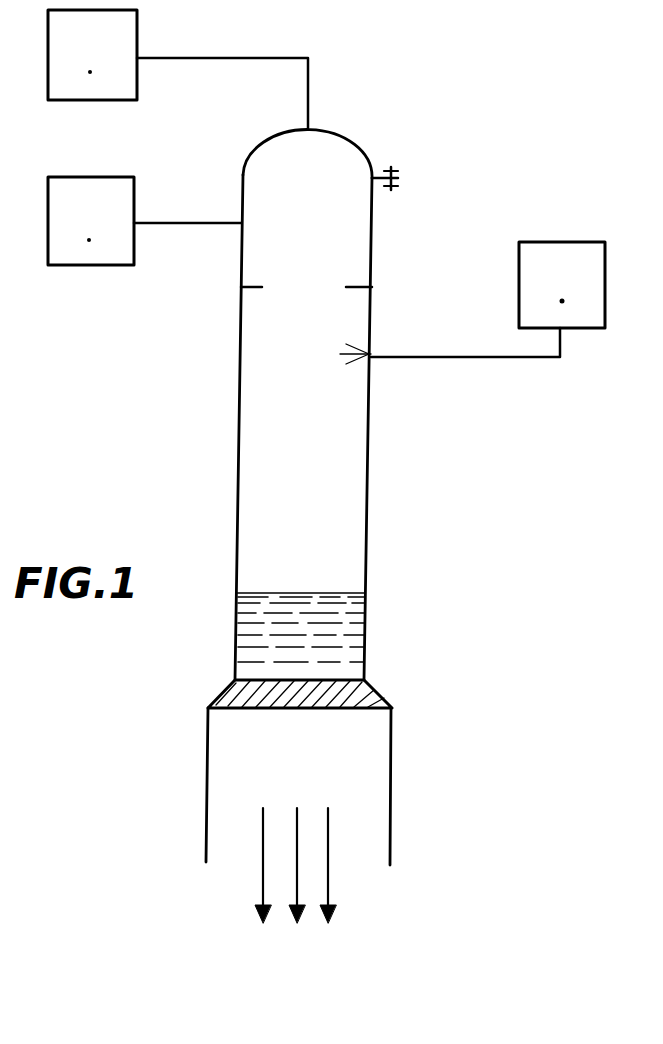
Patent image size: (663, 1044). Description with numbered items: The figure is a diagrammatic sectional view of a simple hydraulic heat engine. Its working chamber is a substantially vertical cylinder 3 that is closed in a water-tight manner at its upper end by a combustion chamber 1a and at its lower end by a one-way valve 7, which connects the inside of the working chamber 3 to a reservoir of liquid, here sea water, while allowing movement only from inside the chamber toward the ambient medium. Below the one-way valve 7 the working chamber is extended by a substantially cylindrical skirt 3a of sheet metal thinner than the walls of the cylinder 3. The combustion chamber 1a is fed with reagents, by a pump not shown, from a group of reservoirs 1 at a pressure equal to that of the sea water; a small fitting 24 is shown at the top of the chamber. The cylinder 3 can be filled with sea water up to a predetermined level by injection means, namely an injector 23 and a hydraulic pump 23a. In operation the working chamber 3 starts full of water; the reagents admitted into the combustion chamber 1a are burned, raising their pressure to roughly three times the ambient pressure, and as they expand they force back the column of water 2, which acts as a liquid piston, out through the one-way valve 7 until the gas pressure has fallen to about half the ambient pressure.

The reservoirs 1 is at (178, 137).
The combustion chamber 1a is at (350, 238).
The column of water 2 is at (348, 633).
The vertical cylinder 3 is at (238, 485).
The cylindrical skirt 3a is at (391, 787).
The one-way valve 7 is at (366, 698).
The injector 23 is at (377, 361).
The hydraulic pump 23a is at (562, 285).
The valve 24 is at (408, 183).